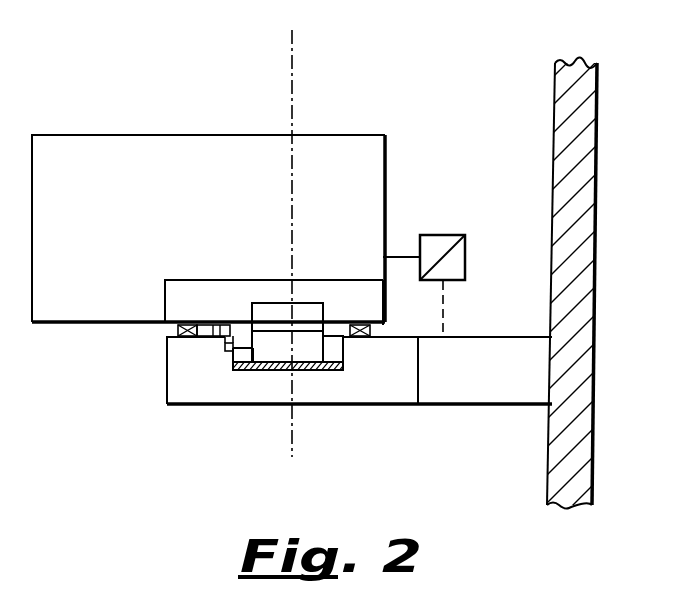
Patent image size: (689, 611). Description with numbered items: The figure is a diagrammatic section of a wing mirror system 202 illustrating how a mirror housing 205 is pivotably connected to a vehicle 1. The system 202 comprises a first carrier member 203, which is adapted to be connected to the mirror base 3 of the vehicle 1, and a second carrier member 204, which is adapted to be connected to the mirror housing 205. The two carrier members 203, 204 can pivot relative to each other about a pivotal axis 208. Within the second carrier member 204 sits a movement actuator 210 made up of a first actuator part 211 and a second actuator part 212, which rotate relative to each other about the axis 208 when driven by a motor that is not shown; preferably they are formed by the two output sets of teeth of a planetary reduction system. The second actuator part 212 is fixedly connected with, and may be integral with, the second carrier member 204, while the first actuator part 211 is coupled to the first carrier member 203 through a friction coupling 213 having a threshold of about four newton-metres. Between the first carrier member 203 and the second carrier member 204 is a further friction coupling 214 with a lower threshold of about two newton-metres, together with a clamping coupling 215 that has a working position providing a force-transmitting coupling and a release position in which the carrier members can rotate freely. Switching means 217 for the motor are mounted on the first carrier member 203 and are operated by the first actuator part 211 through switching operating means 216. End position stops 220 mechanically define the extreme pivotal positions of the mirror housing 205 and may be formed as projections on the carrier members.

The vehicle 1 is at (548, 450).
The mirror base 3 is at (498, 378).
The wing mirror system 202 is at (402, 200).
The first carrier member 203 is at (389, 388).
The second carrier member 204 is at (360, 302).
The mirror housing 205 is at (218, 213).
The pivotal axis 208 is at (292, 62).
The movement actuator 210 is at (190, 398).
The first actuator part 211 is at (312, 347).
The second actuator part 212 is at (305, 315).
The friction coupling 213 is at (408, 367).
The friction coupling 214 is at (383, 333).
The clamping coupling 215 is at (220, 324).
The switching operating means 216 is at (243, 347).
The switching means 217 is at (230, 353).
The end position stops 220 is at (464, 231).